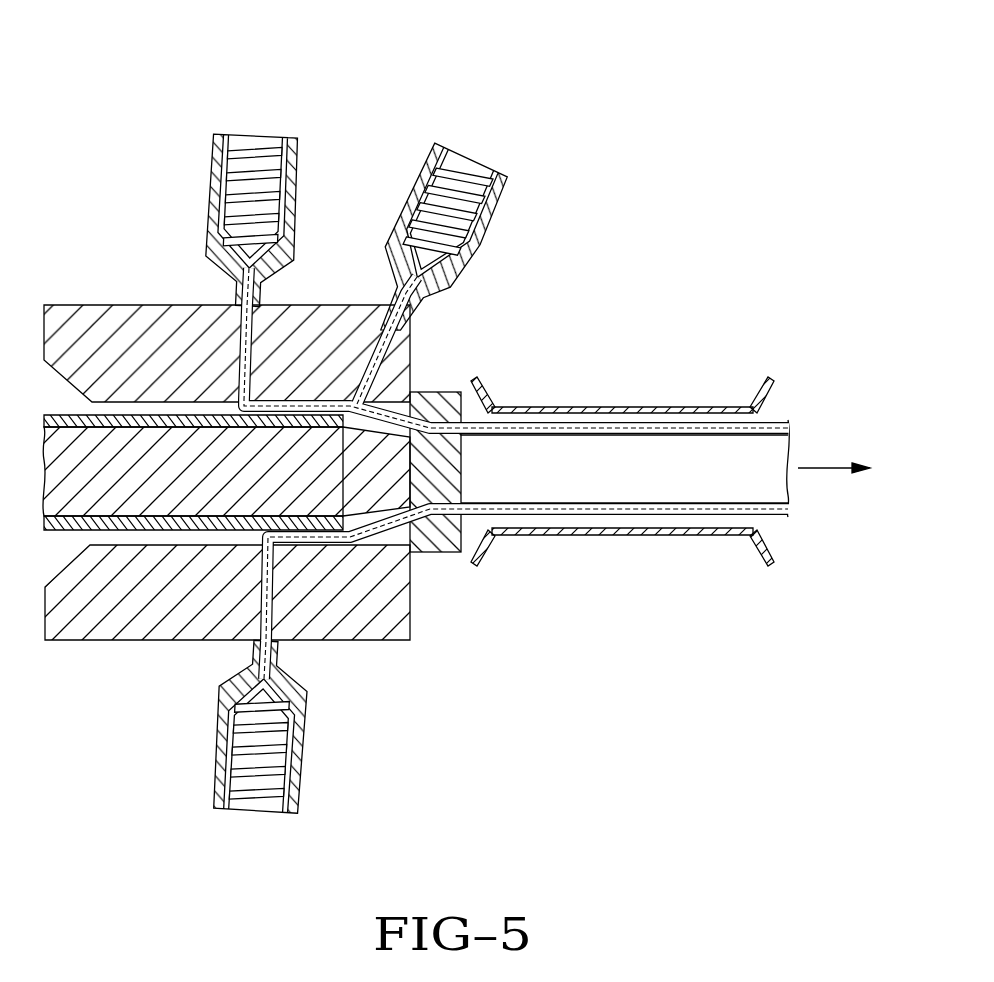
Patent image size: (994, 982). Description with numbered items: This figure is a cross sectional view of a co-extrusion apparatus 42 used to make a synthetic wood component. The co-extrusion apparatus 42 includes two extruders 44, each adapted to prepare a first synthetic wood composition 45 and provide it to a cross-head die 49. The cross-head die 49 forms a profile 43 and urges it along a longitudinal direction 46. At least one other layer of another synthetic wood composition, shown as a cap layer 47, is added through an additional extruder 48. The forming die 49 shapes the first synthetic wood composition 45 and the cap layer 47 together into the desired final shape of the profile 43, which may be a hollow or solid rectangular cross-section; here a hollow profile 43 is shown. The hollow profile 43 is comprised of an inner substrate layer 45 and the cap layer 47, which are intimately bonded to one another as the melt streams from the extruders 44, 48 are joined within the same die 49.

The co-extrusion apparatus 42 is at (128, 117).
The profile 43 is at (633, 485).
The extruder 44 is at (293, 187).
The first synthetic wood composition 45 is at (228, 273).
The longitudinal direction 46 is at (830, 470).
The cap layer 47 is at (453, 265).
The additional extruder 48 is at (493, 203).
The cross-head die 49 is at (428, 391).